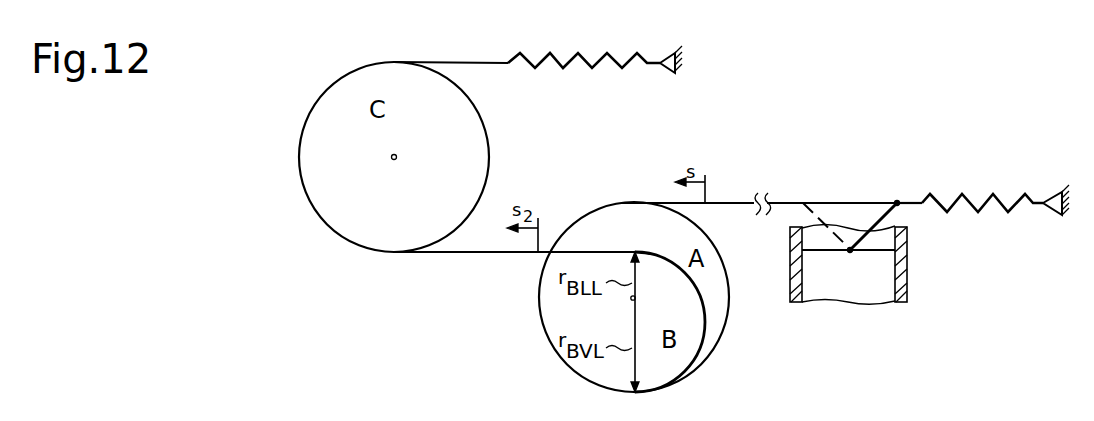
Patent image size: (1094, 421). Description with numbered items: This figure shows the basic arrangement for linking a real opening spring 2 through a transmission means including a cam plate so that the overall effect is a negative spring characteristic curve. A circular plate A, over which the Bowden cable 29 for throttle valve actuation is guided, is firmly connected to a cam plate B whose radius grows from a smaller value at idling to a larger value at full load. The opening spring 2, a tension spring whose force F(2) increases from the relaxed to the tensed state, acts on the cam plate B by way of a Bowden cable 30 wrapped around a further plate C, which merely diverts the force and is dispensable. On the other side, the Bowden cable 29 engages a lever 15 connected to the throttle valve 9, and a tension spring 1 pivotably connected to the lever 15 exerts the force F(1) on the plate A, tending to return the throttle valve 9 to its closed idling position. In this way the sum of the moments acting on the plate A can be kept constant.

The Bowden cable 30 is at (472, 63).
The opening spring 2 is at (627, 62).
The Bowden cable 29 is at (728, 203).
The lever 15 is at (872, 228).
The throttle valve 9 is at (870, 253).
The tension spring 1 is at (983, 210).